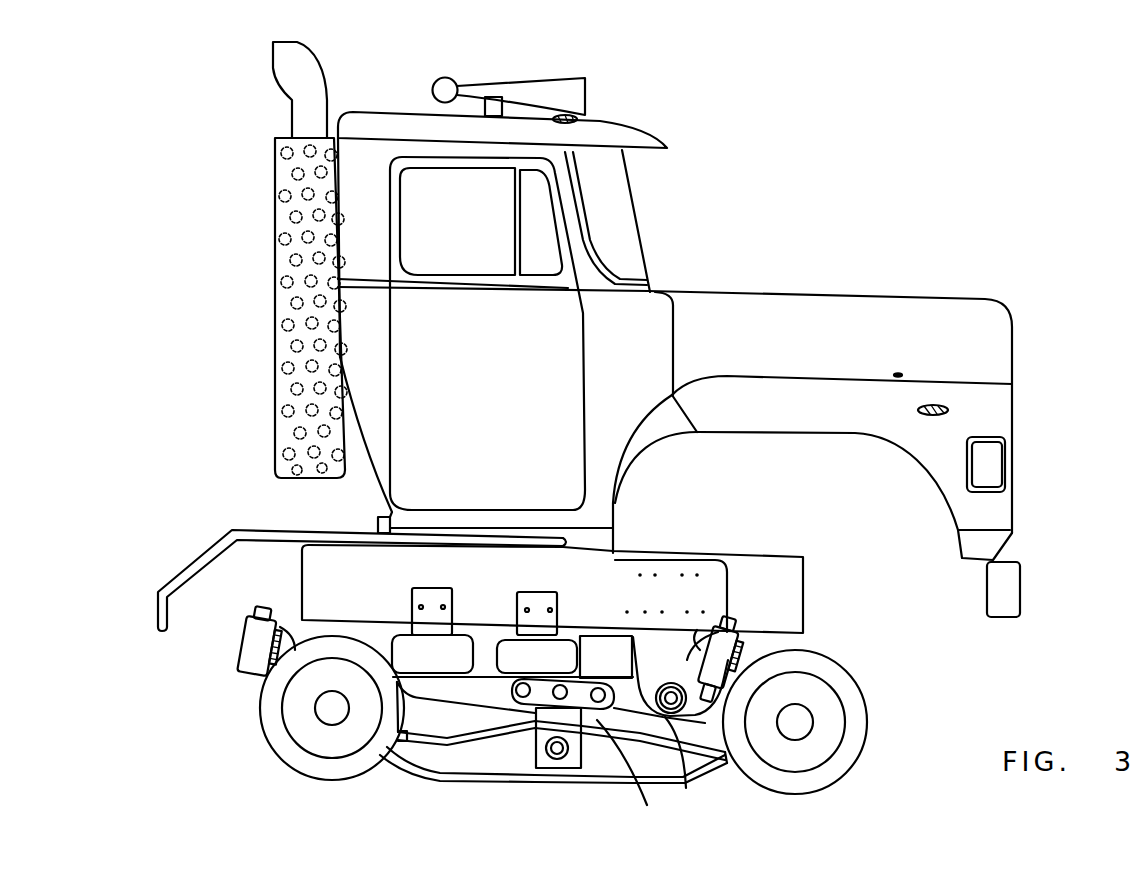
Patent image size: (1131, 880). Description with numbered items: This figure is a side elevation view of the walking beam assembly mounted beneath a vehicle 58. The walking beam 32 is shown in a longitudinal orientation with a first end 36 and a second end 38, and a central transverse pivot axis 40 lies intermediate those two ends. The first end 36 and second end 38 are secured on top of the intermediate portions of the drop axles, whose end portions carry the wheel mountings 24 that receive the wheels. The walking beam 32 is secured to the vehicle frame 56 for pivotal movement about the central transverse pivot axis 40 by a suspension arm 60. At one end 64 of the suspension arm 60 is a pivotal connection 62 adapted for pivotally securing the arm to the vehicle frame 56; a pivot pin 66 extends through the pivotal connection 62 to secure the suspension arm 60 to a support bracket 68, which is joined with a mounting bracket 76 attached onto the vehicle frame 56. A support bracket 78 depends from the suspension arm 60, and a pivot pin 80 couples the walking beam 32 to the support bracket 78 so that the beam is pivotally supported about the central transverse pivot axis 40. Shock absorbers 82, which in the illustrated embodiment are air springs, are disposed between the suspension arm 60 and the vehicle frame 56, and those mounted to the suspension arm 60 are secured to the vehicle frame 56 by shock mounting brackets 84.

The wheel mounting 24 is at (377, 760).
The first walking beam 32 is at (532, 780).
The first end 36 is at (405, 728).
The second end 38 is at (727, 752).
The central transverse pivot axis 40 is at (562, 762).
The vehicle frame 56 is at (803, 587).
The vehicle 58 is at (668, 443).
The suspension arm 60 is at (480, 695).
The pivotal connection 62 is at (680, 750).
The end 64 is at (787, 650).
The pivot pin 66 is at (688, 712).
The support bracket 68 is at (720, 620).
The mounting bracket 76 is at (717, 590).
The support bracket 78 is at (632, 778).
The pivot pin 80 is at (565, 752).
The shock absorber 82 is at (393, 635).
The shock mounting bracket 84 is at (433, 588).